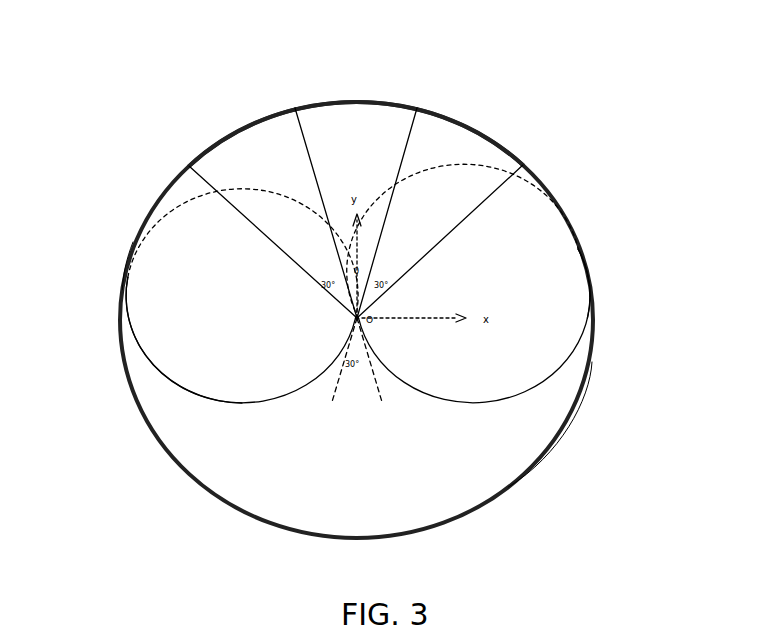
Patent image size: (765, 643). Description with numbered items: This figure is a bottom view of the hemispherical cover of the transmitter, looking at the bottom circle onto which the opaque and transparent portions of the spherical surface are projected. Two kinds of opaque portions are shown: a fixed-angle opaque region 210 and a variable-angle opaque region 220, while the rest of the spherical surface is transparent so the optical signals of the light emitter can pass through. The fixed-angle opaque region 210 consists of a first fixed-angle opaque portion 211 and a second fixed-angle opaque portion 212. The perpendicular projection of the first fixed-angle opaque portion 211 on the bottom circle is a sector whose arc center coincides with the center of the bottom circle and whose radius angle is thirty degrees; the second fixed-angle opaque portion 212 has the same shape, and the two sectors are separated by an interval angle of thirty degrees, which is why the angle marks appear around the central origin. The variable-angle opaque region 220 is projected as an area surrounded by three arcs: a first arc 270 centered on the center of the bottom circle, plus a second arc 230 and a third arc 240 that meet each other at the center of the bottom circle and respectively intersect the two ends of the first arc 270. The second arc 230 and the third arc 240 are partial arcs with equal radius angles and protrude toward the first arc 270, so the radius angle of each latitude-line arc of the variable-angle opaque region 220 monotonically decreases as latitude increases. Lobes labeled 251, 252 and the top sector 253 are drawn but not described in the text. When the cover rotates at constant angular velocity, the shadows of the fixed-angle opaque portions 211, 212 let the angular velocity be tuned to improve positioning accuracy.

The fixed-angle opaque region 210 is at (324, 97).
The first fixed-angle opaque portion 211 is at (233, 163).
The second fixed-angle opaque portion 212 is at (427, 150).
The variable-angle opaque region 220 is at (518, 438).
The second arc 230 is at (165, 373).
The third arc 240 is at (595, 308).
The left lobe region 251 is at (183, 303).
The right lobe region 252 is at (517, 253).
The top sector region 253 is at (387, 123).
The first arc 270 is at (510, 487).